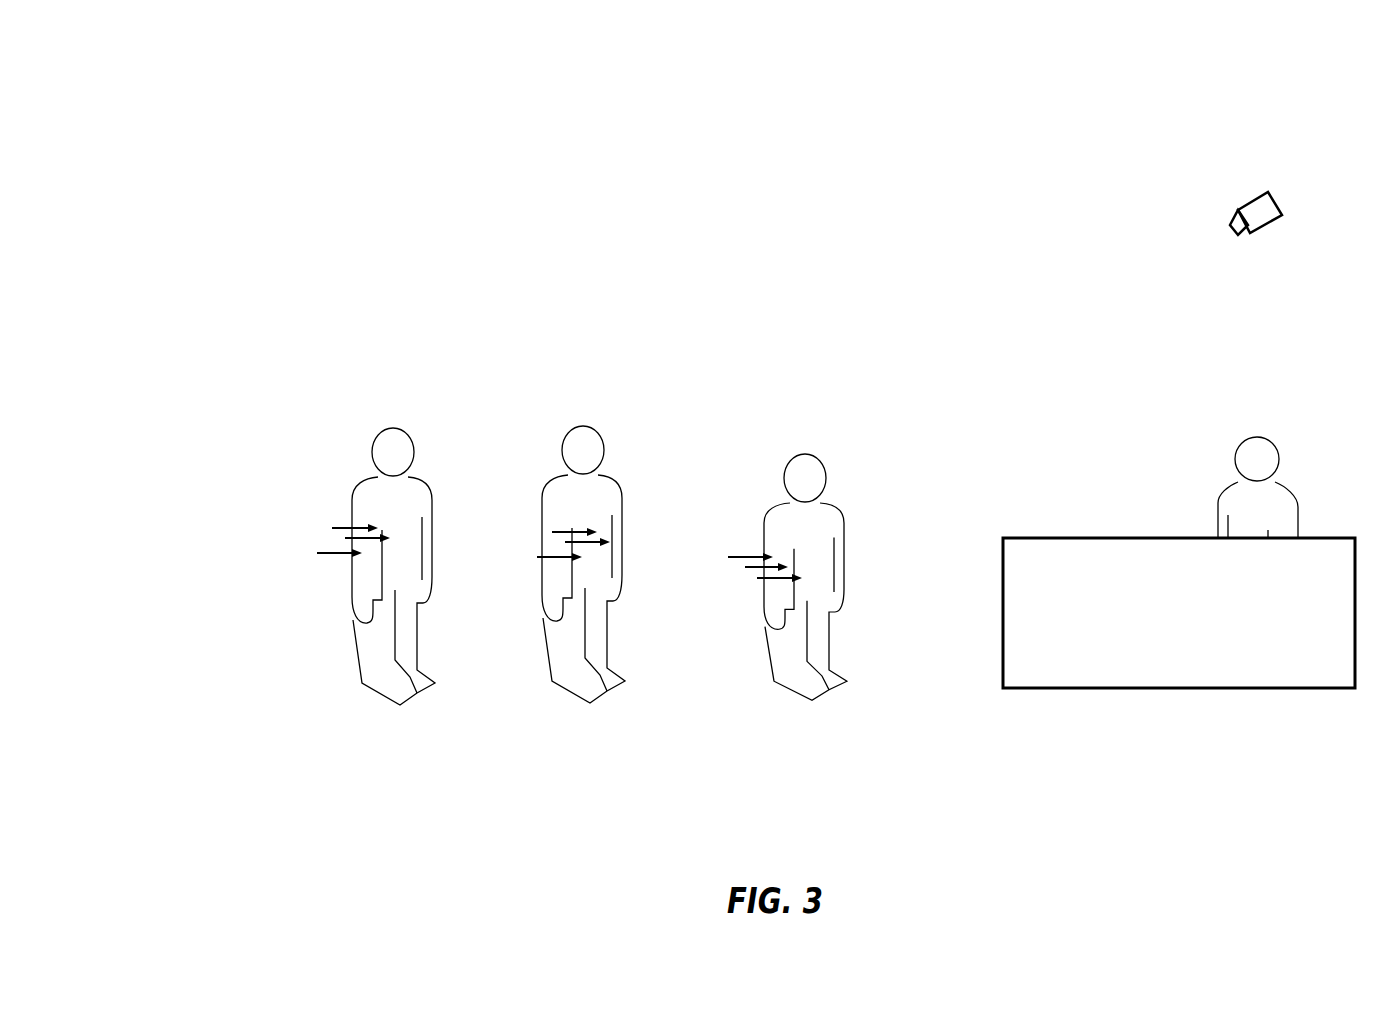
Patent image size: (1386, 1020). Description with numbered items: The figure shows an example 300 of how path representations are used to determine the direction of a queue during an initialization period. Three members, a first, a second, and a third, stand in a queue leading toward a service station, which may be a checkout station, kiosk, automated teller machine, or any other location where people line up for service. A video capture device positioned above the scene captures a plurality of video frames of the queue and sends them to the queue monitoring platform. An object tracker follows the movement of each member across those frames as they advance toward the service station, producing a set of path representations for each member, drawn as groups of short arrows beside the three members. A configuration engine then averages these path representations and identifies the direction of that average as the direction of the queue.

The example of path representations 300 is at (153, 70).